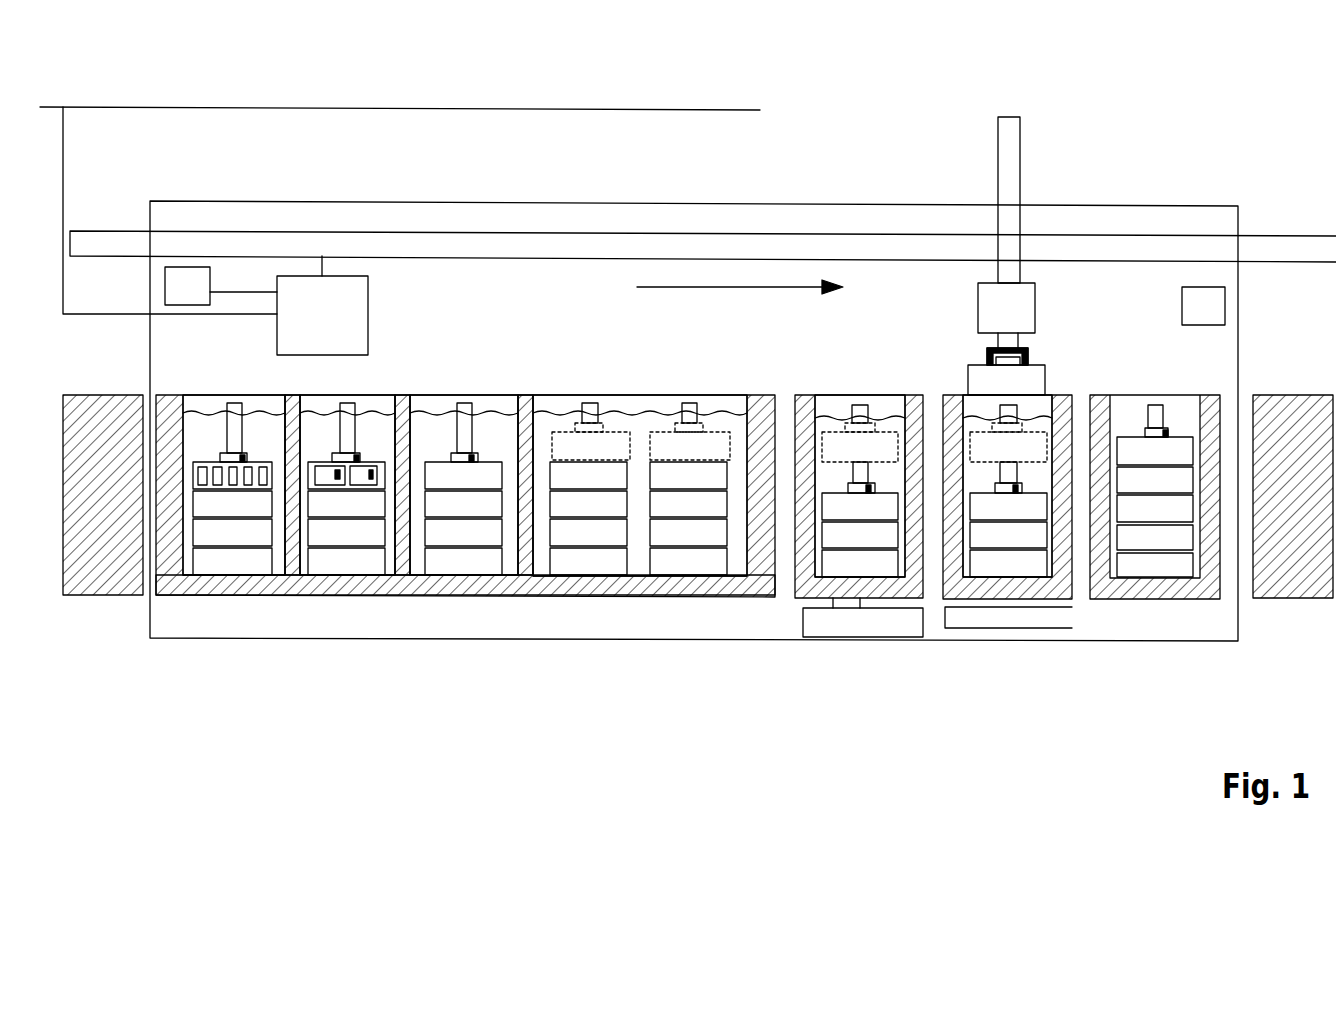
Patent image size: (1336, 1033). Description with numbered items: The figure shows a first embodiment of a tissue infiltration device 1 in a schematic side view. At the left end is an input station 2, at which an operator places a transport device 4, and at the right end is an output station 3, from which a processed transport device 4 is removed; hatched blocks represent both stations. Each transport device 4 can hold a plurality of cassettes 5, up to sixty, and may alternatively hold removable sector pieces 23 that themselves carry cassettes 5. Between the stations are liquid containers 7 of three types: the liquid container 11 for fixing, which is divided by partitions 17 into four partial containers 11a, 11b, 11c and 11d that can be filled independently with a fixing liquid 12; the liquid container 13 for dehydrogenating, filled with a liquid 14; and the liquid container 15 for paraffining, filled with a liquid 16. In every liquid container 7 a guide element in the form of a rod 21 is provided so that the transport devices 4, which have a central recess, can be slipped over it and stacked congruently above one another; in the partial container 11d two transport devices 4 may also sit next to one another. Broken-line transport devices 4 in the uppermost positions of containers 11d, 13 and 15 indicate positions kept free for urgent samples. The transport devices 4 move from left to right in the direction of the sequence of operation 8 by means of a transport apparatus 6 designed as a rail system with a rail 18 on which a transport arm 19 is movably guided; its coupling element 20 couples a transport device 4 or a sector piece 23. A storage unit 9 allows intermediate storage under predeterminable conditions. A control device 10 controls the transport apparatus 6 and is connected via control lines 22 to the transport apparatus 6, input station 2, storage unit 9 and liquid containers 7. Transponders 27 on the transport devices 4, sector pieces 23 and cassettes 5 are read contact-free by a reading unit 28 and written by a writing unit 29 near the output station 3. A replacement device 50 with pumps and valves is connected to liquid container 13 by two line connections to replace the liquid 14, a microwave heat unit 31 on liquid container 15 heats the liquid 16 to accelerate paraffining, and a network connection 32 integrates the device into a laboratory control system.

The tissue infiltration device 1 is at (866, 692).
The input station 2 is at (101, 598).
The output station 3 is at (1303, 600).
The transport device 4 is at (245, 505).
The cassette 5 is at (203, 500).
The transport apparatus 6 is at (703, 248).
The liquid container 7 is at (614, 502).
The direction of the sequence of operation 8 is at (697, 290).
The storage unit 9 is at (1133, 599).
The control device 10 is at (322, 315).
The liquid container for fixing 11 is at (763, 596).
The partial container 11a is at (269, 404).
The partial container 11b is at (386, 397).
The partial container 11c is at (430, 400).
The partial container 11d is at (558, 400).
The liquid 12 is at (211, 430).
The liquid container for dehydrogenating 13 is at (824, 598).
The liquid 14 is at (798, 393).
The liquid container for paraffining 15 is at (961, 602).
The liquid 16 is at (955, 396).
The partition 17 is at (291, 598).
The rail 18 is at (800, 237).
The transport arm 19 is at (1010, 148).
The coupling element 20 is at (1030, 355).
The rod 21 is at (234, 402).
The control line 22 is at (247, 292).
The sector piece 23 is at (332, 482).
The transponder 27 is at (336, 480).
The reading unit 28 is at (185, 292).
The writing unit 29 is at (1207, 310).
The heat unit 31 is at (1000, 626).
The network connection 32 is at (540, 110).
The replacement device 50 is at (860, 625).